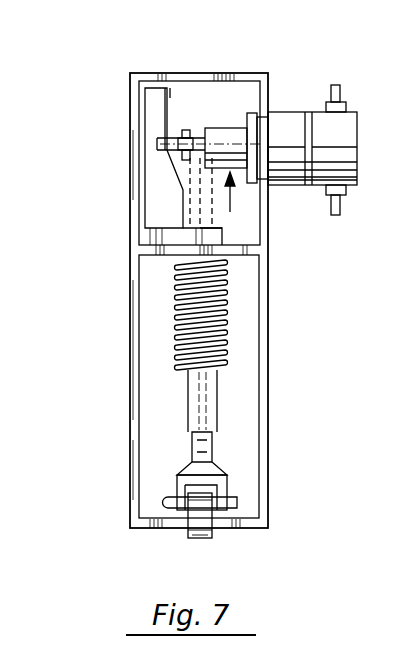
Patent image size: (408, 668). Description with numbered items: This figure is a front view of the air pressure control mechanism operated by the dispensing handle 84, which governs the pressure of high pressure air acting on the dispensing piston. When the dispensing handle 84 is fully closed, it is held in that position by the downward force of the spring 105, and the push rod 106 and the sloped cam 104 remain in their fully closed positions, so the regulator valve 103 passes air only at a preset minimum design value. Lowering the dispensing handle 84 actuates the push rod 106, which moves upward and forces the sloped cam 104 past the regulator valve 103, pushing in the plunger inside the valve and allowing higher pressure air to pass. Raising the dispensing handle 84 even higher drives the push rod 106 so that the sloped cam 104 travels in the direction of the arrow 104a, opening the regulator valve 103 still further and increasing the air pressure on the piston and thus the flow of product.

The regulator valve 103 is at (345, 140).
The sloped cam 104 is at (163, 183).
The arrow 104a is at (232, 204).
The spring 105 is at (226, 325).
The push rod 106 is at (212, 418).
The dispensing handle 84 is at (206, 540).